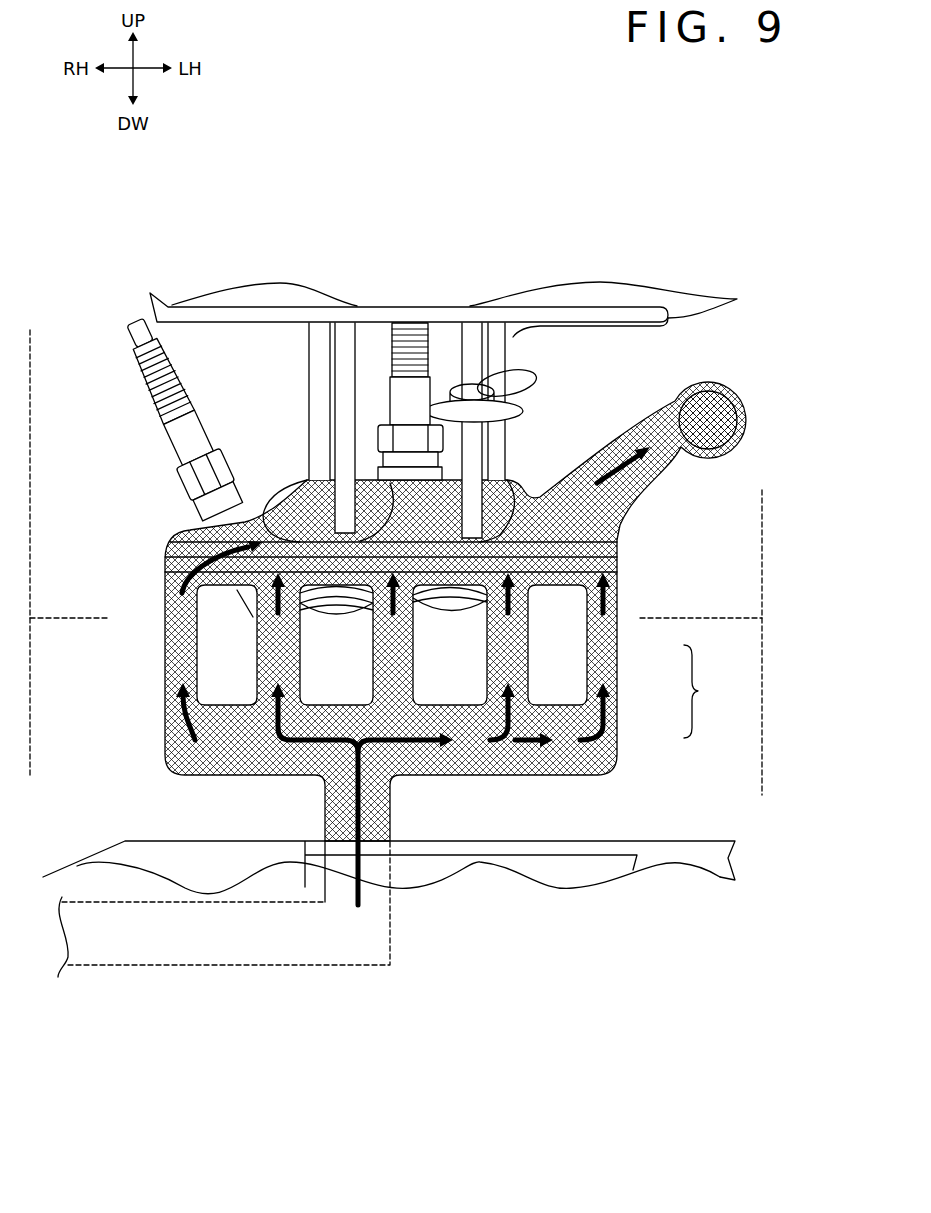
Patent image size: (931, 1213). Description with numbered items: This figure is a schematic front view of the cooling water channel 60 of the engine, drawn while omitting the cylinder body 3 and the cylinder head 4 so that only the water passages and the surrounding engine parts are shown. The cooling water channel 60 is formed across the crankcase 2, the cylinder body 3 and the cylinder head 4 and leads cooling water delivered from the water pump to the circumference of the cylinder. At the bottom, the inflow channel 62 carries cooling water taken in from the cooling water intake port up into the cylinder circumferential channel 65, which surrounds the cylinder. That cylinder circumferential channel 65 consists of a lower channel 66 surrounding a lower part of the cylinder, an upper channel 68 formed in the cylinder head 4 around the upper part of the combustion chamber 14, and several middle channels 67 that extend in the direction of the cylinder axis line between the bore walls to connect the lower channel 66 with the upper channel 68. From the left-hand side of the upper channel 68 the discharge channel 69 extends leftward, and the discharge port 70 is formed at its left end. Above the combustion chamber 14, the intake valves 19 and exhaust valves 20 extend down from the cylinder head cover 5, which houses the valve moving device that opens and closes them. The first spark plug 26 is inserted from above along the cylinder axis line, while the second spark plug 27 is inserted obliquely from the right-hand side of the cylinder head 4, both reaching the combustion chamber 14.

The crankcase 2 is at (735, 855).
The cylinder body 3 is at (755, 740).
The cylinder head 4 is at (755, 562).
The cylinder head cover 5 is at (623, 302).
The combustion chamber 14 is at (335, 670).
The intake valve 19 is at (307, 353).
The exhaust valve 20 is at (340, 347).
The first spark plug 26 is at (393, 377).
The second spark plug 27 is at (176, 434).
The cooling water channel 60 is at (655, 390).
The inflow channel 62 is at (393, 813).
The cylinder circumferential channel 65 is at (705, 691).
The lower channel 66 is at (537, 760).
The middle channel 67 is at (277, 662).
The upper channel 68 is at (180, 532).
The discharge channel 69 is at (588, 435).
The discharge port 70 is at (718, 405).